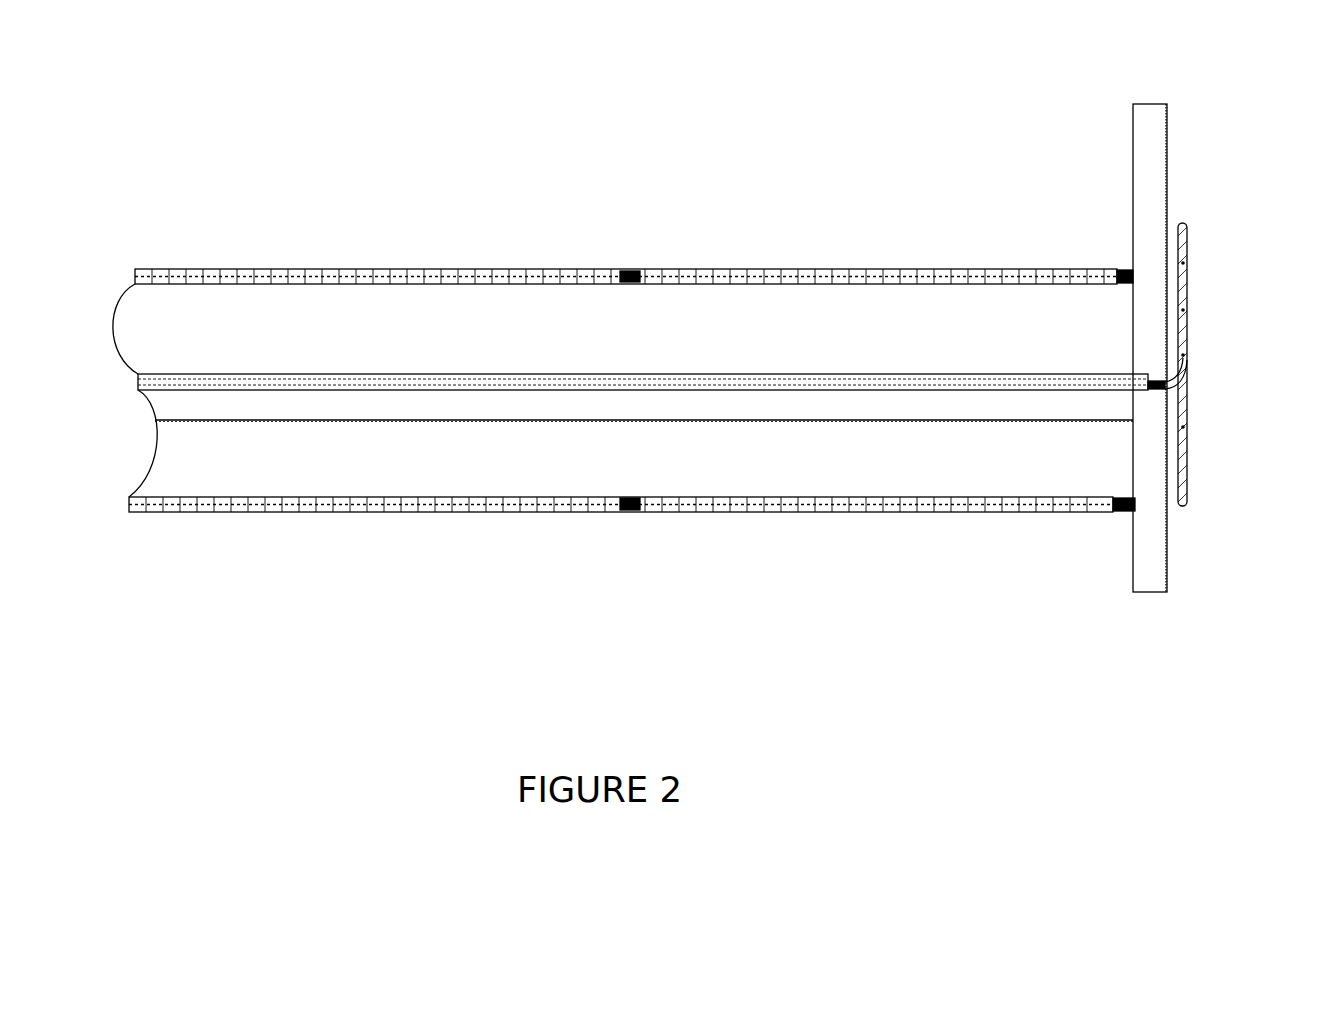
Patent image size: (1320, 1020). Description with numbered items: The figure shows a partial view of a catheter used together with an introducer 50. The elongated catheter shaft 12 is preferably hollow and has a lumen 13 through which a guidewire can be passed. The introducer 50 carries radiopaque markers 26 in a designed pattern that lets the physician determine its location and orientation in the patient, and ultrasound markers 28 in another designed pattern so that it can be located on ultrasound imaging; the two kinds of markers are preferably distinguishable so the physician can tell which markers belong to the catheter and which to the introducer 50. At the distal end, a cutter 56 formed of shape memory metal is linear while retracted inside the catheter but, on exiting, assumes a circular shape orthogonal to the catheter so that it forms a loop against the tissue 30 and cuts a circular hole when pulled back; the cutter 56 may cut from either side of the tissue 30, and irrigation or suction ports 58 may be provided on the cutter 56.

The elongated catheter shaft 12 is at (300, 421).
The lumen 13 is at (372, 400).
The radiopaque markers 26 is at (627, 520).
The ultrasound markers 28 is at (627, 265).
The tissue 30 is at (1152, 561).
The introducer 50 is at (853, 270).
The cutter 56 is at (1187, 443).
The irrigation or suction ports 58 is at (1178, 263).